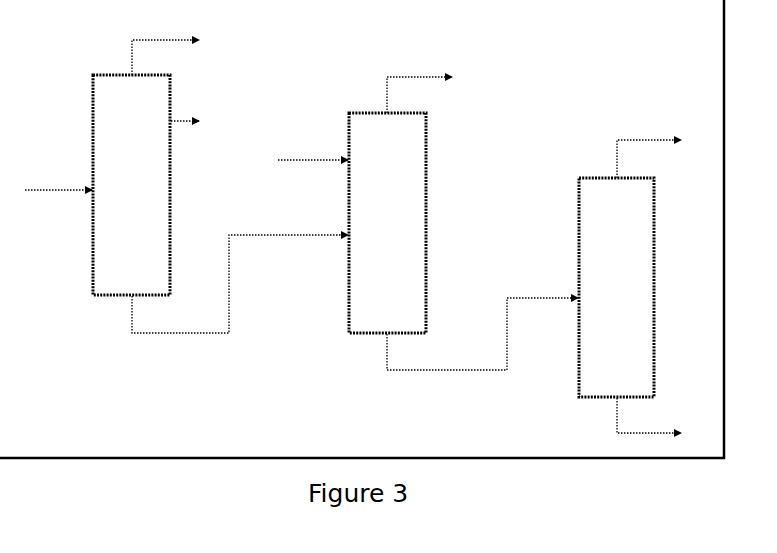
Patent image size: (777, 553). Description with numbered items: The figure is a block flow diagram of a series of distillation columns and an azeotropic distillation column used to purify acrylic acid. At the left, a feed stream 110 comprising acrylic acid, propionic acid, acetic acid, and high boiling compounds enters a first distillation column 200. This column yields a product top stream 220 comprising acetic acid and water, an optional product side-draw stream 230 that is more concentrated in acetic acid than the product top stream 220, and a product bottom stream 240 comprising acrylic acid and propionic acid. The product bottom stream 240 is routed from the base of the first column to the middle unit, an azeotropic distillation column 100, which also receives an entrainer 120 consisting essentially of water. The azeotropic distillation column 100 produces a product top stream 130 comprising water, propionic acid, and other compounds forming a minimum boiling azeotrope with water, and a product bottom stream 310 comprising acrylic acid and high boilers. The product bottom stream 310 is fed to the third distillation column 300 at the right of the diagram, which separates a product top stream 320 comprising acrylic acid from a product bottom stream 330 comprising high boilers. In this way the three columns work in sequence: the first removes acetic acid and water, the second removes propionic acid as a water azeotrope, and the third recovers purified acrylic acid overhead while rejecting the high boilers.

The azeotropic distillation column 100 is at (387, 223).
The feed stream 110 is at (47, 179).
The entrainer 120 is at (300, 155).
The product top stream 130 is at (415, 72).
The first distillation column 200 is at (131, 185).
The product top stream 220 is at (163, 35).
The product side-draw stream 230 is at (188, 110).
The product bottom stream 240 is at (295, 230).
The third distillation column 300 is at (616, 287).
The product bottom stream 310 is at (527, 291).
The product top stream 320 is at (645, 135).
The product bottom stream 330 is at (658, 427).